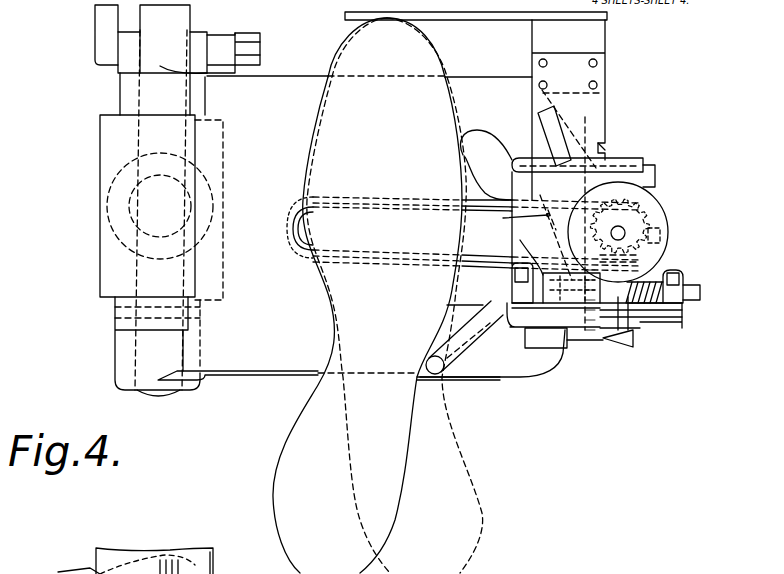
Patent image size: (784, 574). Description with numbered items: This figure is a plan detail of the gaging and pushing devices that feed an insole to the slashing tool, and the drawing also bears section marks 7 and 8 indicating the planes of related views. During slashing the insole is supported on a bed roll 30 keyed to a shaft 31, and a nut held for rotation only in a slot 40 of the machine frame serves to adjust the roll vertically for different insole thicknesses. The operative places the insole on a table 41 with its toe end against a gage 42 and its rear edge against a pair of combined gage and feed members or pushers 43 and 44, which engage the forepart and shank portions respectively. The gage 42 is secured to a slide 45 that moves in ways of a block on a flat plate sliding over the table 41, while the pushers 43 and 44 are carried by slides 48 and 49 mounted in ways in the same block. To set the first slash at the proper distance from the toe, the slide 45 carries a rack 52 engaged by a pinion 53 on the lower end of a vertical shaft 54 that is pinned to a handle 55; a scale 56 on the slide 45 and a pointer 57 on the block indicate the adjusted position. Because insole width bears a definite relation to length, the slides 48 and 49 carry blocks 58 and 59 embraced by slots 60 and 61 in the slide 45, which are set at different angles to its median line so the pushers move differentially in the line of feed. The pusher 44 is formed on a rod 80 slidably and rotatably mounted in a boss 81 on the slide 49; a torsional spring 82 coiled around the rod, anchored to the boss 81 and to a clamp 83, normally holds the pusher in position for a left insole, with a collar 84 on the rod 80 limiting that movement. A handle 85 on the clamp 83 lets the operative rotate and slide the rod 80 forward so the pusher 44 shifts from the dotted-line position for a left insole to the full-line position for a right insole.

The pivot axis 7 is at (587, 120).
The guide rod 8 is at (510, 232).
The bed roll 30 is at (117, 132).
The shaft 31 is at (180, 23).
The slot 40 is at (637, 166).
The table 41 is at (253, 361).
The gage 42 is at (472, 26).
The pusher 43 is at (468, 137).
The pusher 44 is at (442, 347).
The slide 45 is at (595, 110).
The slide 48 is at (648, 182).
The slide 49 is at (541, 303).
The rack 52 is at (600, 153).
The pinion 53 is at (647, 213).
The vertical shaft 54 is at (625, 233).
The handle 55 is at (650, 250).
The scale 56 is at (594, 332).
The pointer 57 is at (625, 336).
The block 58 is at (577, 188).
The block 59 is at (546, 338).
The slot 60 is at (552, 123).
The slot 61 is at (512, 223).
The rod 80 is at (522, 252).
The boss 81 is at (633, 335).
The torsional spring 82 is at (663, 325).
The clamp 83 is at (684, 306).
The collar 84 is at (512, 290).
The handle 85 is at (682, 285).